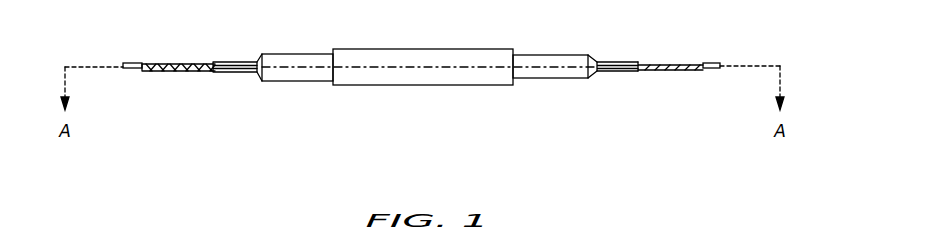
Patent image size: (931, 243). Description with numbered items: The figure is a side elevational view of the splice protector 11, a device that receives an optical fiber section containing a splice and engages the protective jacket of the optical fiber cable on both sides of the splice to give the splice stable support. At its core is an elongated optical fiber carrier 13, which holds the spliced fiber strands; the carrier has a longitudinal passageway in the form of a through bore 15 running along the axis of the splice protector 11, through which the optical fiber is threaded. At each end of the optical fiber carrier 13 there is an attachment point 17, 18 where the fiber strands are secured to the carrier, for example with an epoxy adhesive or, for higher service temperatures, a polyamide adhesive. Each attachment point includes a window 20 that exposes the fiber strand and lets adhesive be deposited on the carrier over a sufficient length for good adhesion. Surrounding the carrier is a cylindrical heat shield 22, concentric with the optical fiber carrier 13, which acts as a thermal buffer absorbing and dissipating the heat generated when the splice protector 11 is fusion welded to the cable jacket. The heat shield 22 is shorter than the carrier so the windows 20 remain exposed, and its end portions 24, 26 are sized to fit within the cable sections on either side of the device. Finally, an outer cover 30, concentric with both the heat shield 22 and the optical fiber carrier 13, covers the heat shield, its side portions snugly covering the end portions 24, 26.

The splice protector 11 is at (335, 102).
The optical fiber carrier 13 is at (226, 73).
The through bore 15 is at (630, 63).
The attachment point 17 is at (724, 69).
The attachment point 18 is at (121, 68).
The window 20 is at (210, 62).
The heat shield 22 is at (555, 55).
The end portion 24 is at (518, 79).
The end portion 26 is at (265, 82).
The outer cover 30 is at (493, 49).